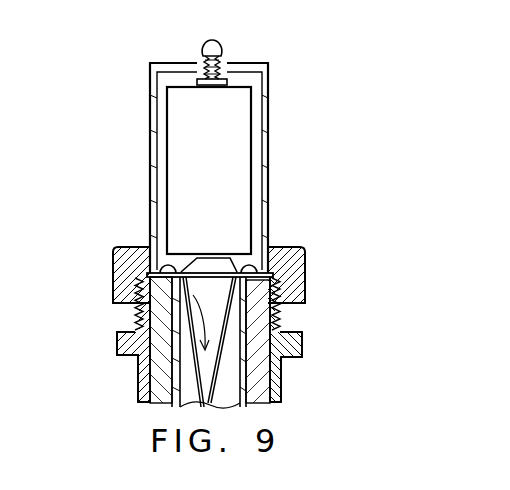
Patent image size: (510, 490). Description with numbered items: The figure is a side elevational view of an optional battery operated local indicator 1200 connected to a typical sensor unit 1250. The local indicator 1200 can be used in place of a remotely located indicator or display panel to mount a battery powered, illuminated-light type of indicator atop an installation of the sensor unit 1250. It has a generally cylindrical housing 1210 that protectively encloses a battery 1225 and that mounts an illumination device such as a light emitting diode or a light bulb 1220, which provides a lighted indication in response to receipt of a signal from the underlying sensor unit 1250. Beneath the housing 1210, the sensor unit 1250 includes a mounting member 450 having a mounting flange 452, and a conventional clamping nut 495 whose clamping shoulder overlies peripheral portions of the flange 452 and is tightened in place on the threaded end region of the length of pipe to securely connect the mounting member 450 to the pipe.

The local indicator 1200 is at (273, 171).
The housing 1210 is at (267, 113).
The light bulb 1220 is at (230, 46).
The battery 1225 is at (186, 149).
The clamping nut 495 is at (307, 279).
The mounting member 450 is at (263, 318).
The mounting flange 452 is at (137, 297).
The sensor unit 1250 is at (137, 322).